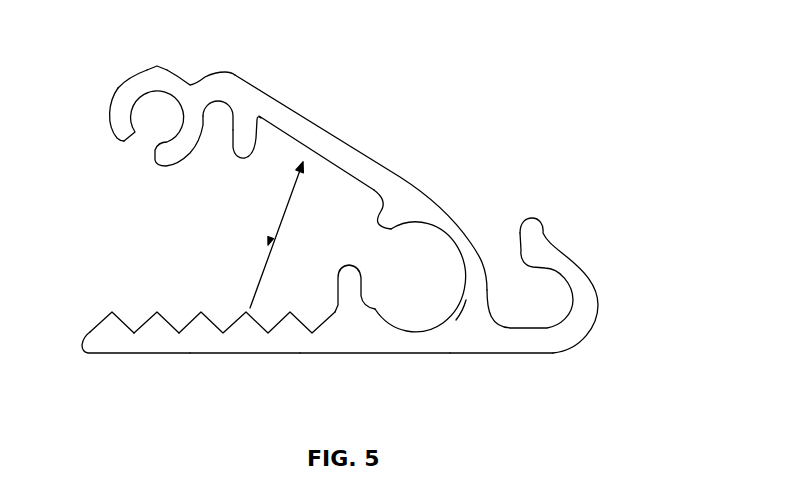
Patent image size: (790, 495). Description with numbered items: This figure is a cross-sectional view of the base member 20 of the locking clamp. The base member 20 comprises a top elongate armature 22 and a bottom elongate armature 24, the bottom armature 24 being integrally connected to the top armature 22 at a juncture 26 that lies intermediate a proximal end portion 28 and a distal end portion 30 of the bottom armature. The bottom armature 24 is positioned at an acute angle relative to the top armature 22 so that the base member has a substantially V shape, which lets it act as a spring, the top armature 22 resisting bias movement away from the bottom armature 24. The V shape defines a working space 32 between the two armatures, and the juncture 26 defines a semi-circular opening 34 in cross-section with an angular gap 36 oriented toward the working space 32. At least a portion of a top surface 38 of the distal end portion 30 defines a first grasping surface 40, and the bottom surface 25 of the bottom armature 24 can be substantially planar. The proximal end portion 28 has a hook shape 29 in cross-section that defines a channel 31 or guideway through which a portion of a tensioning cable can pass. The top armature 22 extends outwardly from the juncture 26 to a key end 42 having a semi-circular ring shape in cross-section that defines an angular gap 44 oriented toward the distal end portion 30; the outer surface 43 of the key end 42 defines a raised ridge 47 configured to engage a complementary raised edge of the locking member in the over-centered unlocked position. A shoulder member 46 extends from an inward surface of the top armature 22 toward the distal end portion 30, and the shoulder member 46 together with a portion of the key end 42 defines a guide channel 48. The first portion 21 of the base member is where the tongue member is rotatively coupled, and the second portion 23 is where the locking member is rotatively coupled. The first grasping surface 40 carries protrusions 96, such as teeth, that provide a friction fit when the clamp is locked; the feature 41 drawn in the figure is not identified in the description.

The base member 20 is at (598, 178).
The first portion 21 is at (427, 261).
The top elongate armature 22 is at (327, 132).
The second portion 23 is at (108, 102).
The bottom elongate armature 24 is at (247, 354).
The bottom surface 25 is at (355, 353).
The juncture 26 is at (458, 322).
The proximal end portion 28 is at (535, 356).
The hook shape 29 is at (600, 290).
The distal end portion 30 is at (150, 354).
The channel 31 is at (533, 312).
The working space 32 is at (187, 236).
The semi-circular opening 34 is at (422, 301).
The angular gap 36 is at (367, 259).
The top surface 38 is at (146, 310).
The first grasping surface 40 is at (201, 312).
The inner wall 41 is at (278, 131).
The key end 42 is at (183, 60).
The outer surface 43 is at (117, 84).
The angular gap 44 is at (142, 176).
The shoulder member 46 is at (228, 157).
The raised ridge 47 is at (154, 65).
The guide channel 48 is at (227, 130).
The protrusions 96 is at (113, 312).